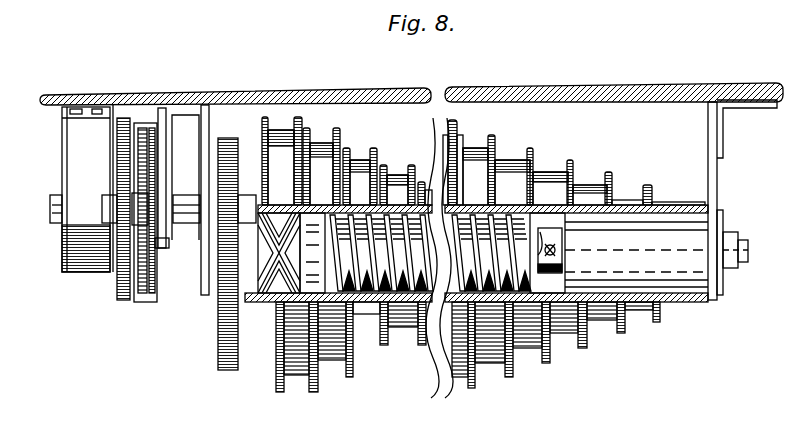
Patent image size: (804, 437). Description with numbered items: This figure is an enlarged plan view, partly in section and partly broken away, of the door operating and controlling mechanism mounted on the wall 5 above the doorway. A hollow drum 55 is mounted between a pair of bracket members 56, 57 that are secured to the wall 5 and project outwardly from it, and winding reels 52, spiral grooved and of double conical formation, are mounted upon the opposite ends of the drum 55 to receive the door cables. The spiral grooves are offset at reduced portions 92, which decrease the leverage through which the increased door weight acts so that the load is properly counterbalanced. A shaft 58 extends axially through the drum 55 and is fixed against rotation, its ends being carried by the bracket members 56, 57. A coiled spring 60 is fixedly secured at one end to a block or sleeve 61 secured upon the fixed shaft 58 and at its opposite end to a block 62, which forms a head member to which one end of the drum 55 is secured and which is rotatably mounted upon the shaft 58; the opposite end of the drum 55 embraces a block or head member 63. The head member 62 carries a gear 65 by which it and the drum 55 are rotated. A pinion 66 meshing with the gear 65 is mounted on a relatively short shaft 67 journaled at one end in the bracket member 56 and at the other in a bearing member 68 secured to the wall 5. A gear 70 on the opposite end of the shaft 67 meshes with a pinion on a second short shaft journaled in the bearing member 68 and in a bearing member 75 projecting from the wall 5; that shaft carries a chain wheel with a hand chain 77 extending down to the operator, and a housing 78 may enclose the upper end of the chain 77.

The wall 5 is at (280, 91).
The bracket member 57 is at (714, 92).
The bearing member 75 is at (78, 251).
The shaft 67 is at (108, 197).
The gear 70 is at (119, 292).
The hand chain 77 is at (148, 298).
The housing 78 is at (156, 288).
The bearing member 68 is at (161, 112).
The bracket member 56 is at (212, 105).
The gear 65 is at (228, 366).
The drum 55 is at (681, 204).
The block 62 is at (262, 303).
The shaft 58 is at (404, 240).
The coiled spring 60 is at (552, 226).
The block or sleeve 61 is at (556, 250).
The pinion 66 is at (240, 140).
The winding reels 52 is at (331, 373).
The offset portions 92 is at (368, 310).
The block or head member 63 is at (695, 270).